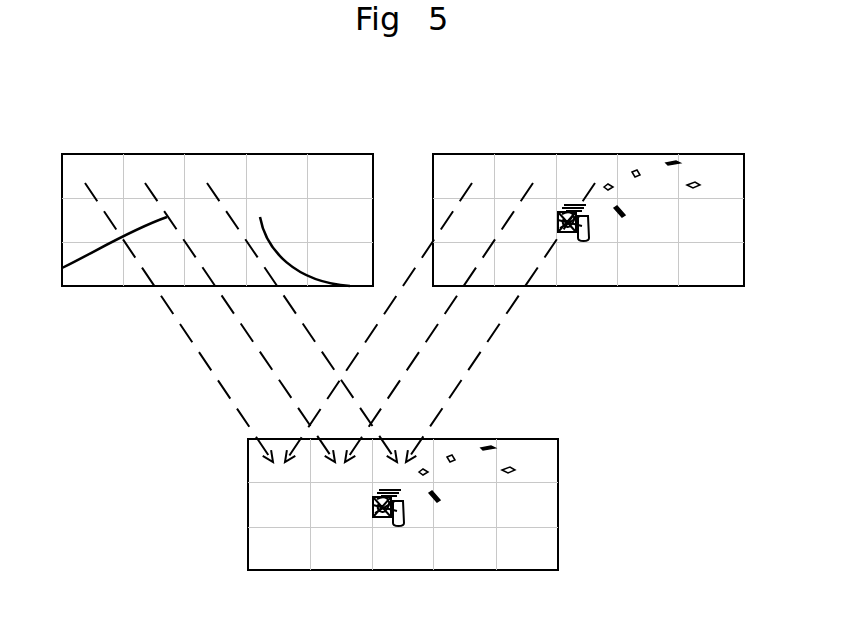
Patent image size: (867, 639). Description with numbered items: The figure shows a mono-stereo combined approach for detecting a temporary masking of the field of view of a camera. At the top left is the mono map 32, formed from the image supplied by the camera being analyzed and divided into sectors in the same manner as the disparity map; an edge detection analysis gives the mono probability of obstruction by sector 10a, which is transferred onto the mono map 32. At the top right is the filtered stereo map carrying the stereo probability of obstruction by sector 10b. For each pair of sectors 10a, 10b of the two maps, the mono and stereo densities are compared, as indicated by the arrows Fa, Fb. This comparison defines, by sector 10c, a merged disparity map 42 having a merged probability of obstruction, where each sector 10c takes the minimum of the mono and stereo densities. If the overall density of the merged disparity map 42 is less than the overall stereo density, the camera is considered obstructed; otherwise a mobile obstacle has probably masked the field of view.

The mono map 32 is at (145, 154).
The sector of mono map 10a is at (223, 150).
The sector of stereo map 10b is at (592, 150).
The sector of merged disparity map 10c is at (411, 425).
The merged disparity map 42 is at (248, 540).
The comparison arrow Fa is at (295, 309).
The comparison arrow Fb is at (508, 313).